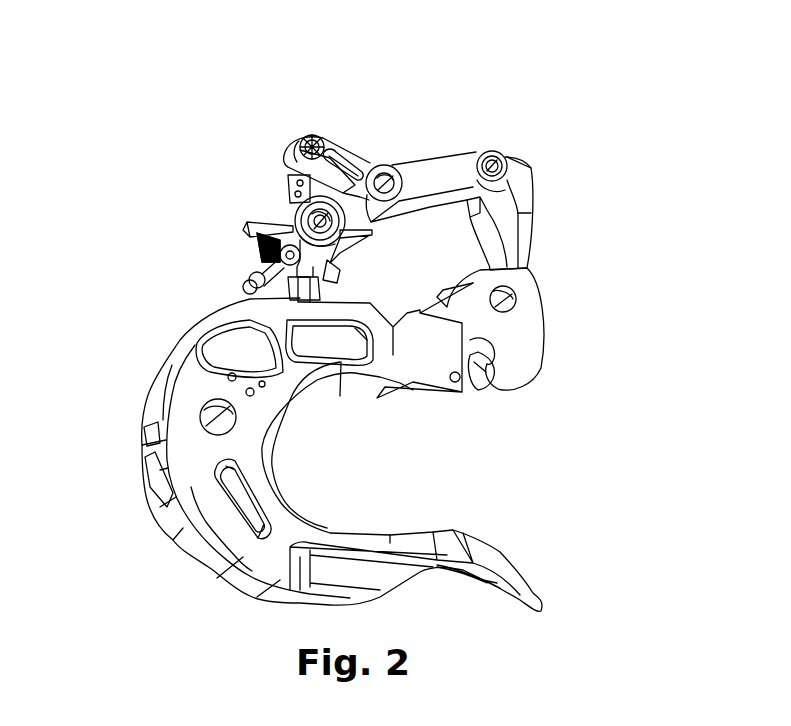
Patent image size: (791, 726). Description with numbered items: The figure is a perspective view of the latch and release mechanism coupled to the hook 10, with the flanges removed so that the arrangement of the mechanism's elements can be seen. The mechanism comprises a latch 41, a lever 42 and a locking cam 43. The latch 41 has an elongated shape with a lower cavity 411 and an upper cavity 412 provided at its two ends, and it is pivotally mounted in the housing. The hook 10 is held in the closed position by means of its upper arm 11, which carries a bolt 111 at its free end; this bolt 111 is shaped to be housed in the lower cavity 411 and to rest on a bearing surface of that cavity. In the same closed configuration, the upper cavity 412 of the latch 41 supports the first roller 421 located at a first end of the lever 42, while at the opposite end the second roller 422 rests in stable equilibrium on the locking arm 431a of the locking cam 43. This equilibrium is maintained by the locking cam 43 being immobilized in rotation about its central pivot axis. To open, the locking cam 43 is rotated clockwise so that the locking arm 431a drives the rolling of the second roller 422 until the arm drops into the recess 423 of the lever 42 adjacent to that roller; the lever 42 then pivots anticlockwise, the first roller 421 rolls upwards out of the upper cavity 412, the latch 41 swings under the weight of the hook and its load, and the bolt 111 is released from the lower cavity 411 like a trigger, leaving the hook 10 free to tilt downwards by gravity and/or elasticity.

The hook 10 is at (157, 430).
The upper arm 11 is at (352, 388).
The bolt 111 is at (490, 357).
The latch 41 is at (540, 250).
The lower cavity 411 is at (475, 342).
The upper cavity 412 is at (532, 188).
The lever 42 is at (392, 151).
The first roller 421 is at (483, 150).
The second roller 422 is at (315, 138).
The recess 423 is at (341, 190).
The locking cam 43 is at (268, 206).
The locking arm 431a is at (283, 217).